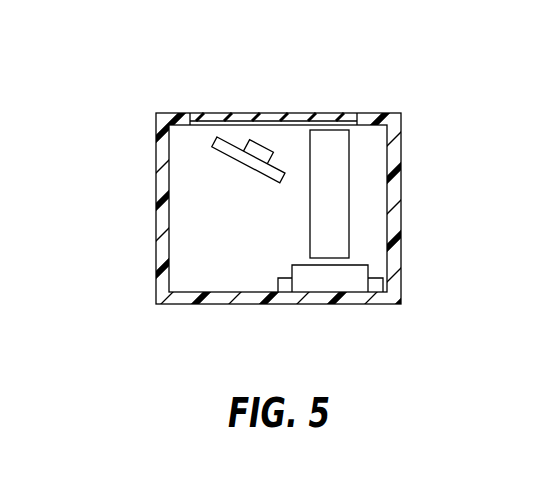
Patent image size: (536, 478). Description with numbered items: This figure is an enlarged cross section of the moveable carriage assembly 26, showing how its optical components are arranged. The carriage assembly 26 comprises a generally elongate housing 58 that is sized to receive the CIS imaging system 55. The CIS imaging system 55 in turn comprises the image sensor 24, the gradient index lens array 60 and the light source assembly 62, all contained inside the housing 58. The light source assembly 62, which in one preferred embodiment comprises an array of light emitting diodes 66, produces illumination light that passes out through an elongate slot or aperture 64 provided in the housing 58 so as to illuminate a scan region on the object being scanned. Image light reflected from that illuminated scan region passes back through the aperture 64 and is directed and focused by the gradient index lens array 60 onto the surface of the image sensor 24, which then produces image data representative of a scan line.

The carriage assembly 26 is at (106, 68).
The housing 58 is at (154, 151).
The CIS imaging system 55 is at (198, 254).
The aperture 64 is at (353, 118).
The gradient index lens array 60 is at (349, 167).
The image sensor 24 is at (366, 260).
The light source assembly 62 is at (228, 162).
The light emitting diodes 66 is at (258, 143).